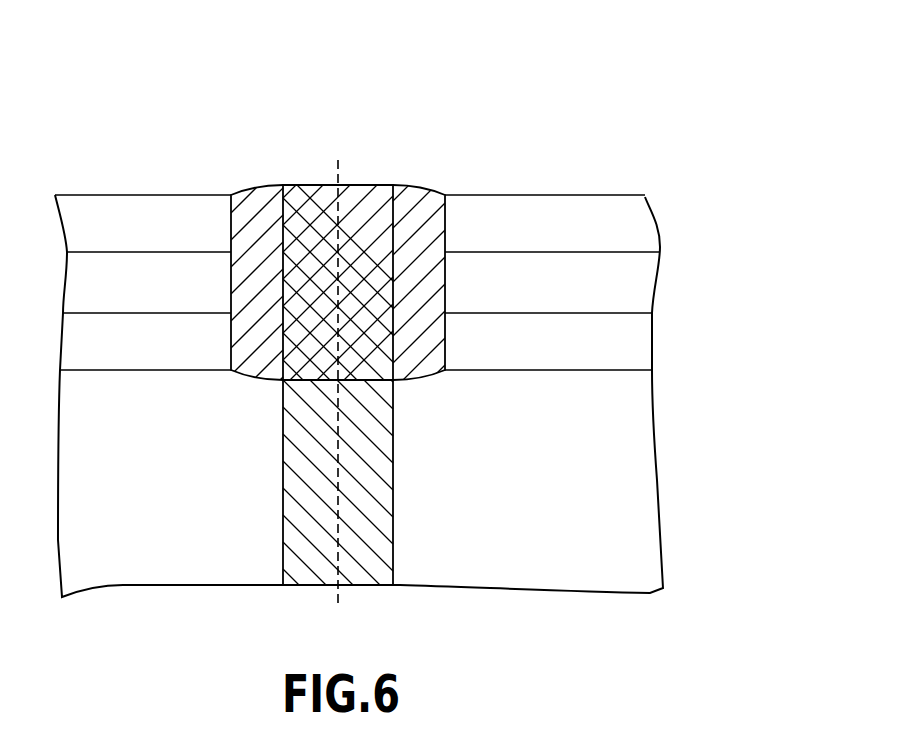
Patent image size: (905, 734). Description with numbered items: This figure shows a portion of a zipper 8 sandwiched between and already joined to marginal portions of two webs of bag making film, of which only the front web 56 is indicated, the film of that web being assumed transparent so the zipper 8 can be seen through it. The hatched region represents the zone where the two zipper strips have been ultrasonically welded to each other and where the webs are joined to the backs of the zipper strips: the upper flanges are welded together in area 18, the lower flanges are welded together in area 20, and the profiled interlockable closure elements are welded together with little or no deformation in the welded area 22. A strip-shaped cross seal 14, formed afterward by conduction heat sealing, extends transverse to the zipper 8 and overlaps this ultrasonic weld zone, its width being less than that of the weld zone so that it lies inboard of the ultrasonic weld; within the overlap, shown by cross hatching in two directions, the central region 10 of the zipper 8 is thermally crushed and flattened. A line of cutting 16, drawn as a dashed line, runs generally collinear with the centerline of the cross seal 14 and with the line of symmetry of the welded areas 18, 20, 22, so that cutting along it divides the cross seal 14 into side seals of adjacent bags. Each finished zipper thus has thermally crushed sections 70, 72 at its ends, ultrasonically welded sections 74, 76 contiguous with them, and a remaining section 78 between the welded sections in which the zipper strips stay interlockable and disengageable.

The zipper 8 is at (595, 196).
The central region 10 is at (617, 315).
The cross seal 14 is at (395, 507).
The line of cutting 16 is at (338, 597).
The area 18 is at (407, 193).
The area 20 is at (417, 367).
The welded area 22 is at (240, 277).
The front web 56 is at (638, 430).
The thermally crushed section 70 is at (362, 135).
The thermally crushed section 72 is at (310, 135).
The ultrasonically welded section 74 is at (428, 135).
The ultrasonically welded section 76 is at (247, 135).
The remaining section 78 is at (123, 135).